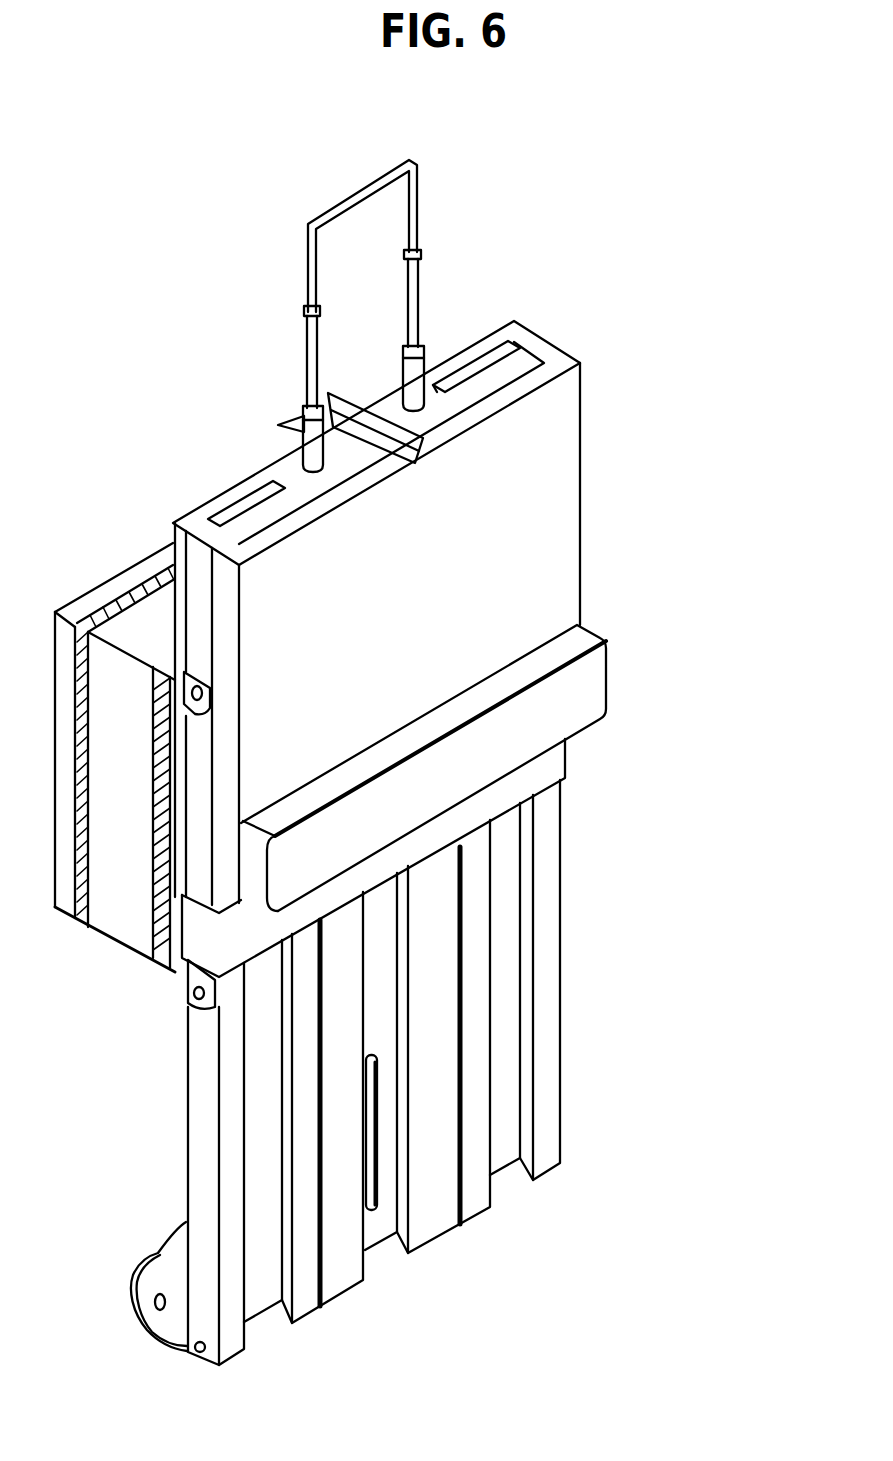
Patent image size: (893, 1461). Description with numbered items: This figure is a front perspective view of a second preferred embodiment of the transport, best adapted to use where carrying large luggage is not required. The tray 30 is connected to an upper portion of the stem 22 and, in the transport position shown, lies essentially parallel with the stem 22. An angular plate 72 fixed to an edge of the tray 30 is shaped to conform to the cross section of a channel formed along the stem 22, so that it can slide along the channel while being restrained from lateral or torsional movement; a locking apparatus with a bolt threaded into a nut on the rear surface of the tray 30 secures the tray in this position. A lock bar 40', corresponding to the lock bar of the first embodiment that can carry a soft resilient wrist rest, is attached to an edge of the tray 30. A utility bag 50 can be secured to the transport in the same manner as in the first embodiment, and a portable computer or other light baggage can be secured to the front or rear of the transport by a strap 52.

The stem 22 is at (380, 1013).
The tray 30 is at (445, 568).
The support bar 40' is at (498, 743).
The utility bag 50 is at (90, 605).
The strap 52 is at (560, 758).
The angular plate 72 is at (352, 397).